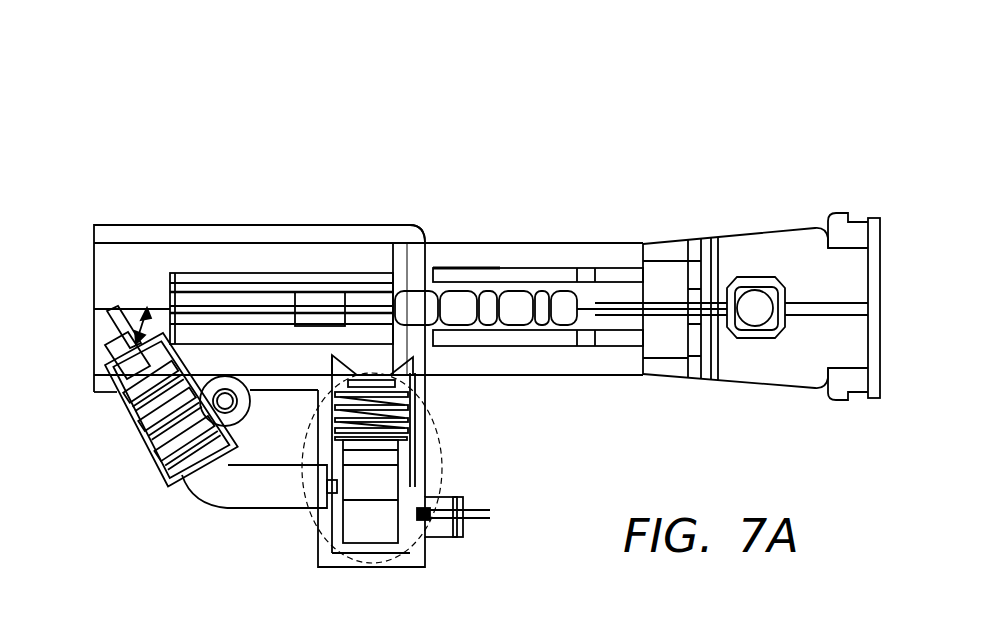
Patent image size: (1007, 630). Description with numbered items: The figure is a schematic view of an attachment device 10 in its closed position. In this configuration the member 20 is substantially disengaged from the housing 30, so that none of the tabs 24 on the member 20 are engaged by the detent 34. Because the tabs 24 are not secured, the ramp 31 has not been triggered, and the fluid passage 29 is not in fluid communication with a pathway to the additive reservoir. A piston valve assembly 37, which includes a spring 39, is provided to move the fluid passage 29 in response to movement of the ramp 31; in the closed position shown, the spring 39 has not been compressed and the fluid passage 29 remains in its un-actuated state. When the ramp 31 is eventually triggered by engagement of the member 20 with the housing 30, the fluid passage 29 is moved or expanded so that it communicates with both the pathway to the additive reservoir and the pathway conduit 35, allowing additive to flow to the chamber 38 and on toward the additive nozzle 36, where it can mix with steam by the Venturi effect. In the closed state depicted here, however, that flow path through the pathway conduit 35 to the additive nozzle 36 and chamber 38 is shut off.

The attachment device 10 is at (712, 164).
The member 20 is at (613, 263).
The tabs 24 is at (467, 297).
The fluid passage 29 is at (373, 485).
The housing 30 is at (273, 255).
The ramp 31 is at (383, 373).
The detent 34 is at (362, 300).
The pathway conduit 35 is at (225, 495).
The additive nozzle 36 is at (100, 325).
The piston valve assembly 37 is at (438, 437).
The chamber 38 is at (117, 270).
The spring 39 is at (368, 409).